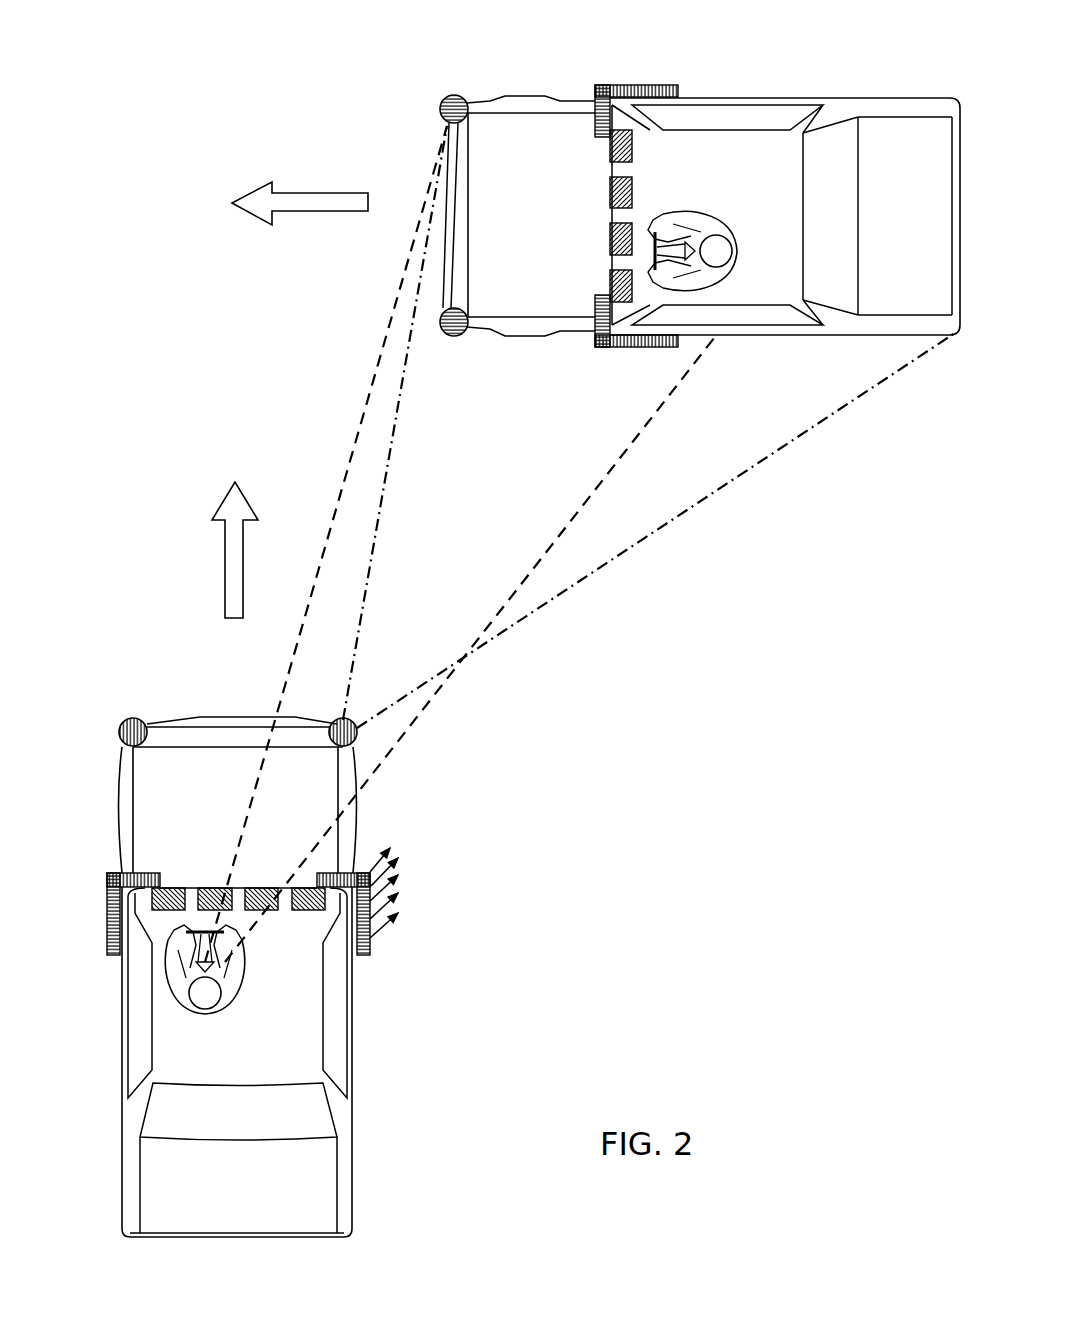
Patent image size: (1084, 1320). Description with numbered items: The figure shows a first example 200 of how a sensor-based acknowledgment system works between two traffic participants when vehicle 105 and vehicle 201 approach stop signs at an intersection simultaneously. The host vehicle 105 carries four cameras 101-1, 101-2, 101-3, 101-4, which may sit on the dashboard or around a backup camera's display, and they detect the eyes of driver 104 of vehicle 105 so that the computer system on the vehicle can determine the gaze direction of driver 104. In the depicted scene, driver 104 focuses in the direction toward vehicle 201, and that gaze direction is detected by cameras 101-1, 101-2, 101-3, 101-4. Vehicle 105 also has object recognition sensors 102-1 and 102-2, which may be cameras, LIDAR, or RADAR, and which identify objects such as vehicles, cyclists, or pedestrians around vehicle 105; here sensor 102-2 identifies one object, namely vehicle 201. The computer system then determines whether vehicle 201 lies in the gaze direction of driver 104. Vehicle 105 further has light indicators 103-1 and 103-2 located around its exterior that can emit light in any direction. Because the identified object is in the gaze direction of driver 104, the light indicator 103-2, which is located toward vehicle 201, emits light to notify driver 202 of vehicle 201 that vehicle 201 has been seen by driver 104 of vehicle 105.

The first example 200 is at (157, 70).
The camera 101-1 is at (172, 888).
The camera 101-2 is at (215, 888).
The camera 101-3 is at (268, 888).
The camera 101-4 is at (303, 912).
The sensor 102-1 is at (133, 718).
The sensor 102-2 is at (348, 719).
The light indicator 103-1 is at (107, 905).
The light indicator 103-2 is at (370, 948).
The driver 104 is at (223, 1005).
The vehicle 105 is at (263, 1071).
The vehicle 201 is at (778, 178).
The driver 202 is at (735, 223).